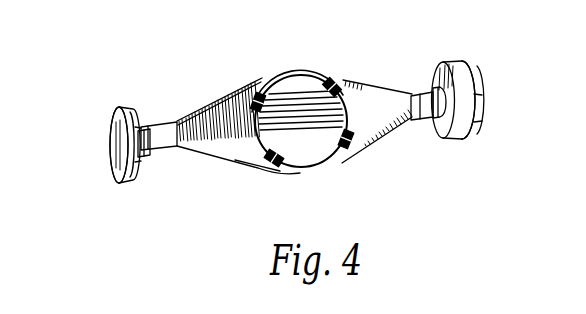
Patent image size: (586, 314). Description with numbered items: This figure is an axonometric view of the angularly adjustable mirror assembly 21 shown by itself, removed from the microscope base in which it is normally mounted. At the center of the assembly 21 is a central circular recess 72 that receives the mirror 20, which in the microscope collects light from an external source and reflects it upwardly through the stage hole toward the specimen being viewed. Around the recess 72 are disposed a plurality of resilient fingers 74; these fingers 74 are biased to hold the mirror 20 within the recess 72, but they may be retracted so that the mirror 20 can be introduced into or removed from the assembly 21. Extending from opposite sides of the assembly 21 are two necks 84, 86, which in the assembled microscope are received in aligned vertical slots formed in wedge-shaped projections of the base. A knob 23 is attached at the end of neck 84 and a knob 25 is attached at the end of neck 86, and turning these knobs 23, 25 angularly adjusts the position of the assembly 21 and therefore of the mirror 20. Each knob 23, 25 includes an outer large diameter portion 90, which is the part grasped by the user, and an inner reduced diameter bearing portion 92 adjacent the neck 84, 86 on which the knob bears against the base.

The mirror 20 is at (295, 78).
The adjustable mirror assembly 21 is at (372, 82).
The knob 23 is at (110, 131).
The knob 25 is at (480, 73).
The central circular recess 72 is at (329, 80).
The resilient fingers 74 is at (261, 92).
The neck 84 is at (158, 122).
The neck 86 is at (426, 121).
The outer large diameter portion 90 is at (117, 177).
The inner reduced diameter bearing portion 92 is at (148, 156).